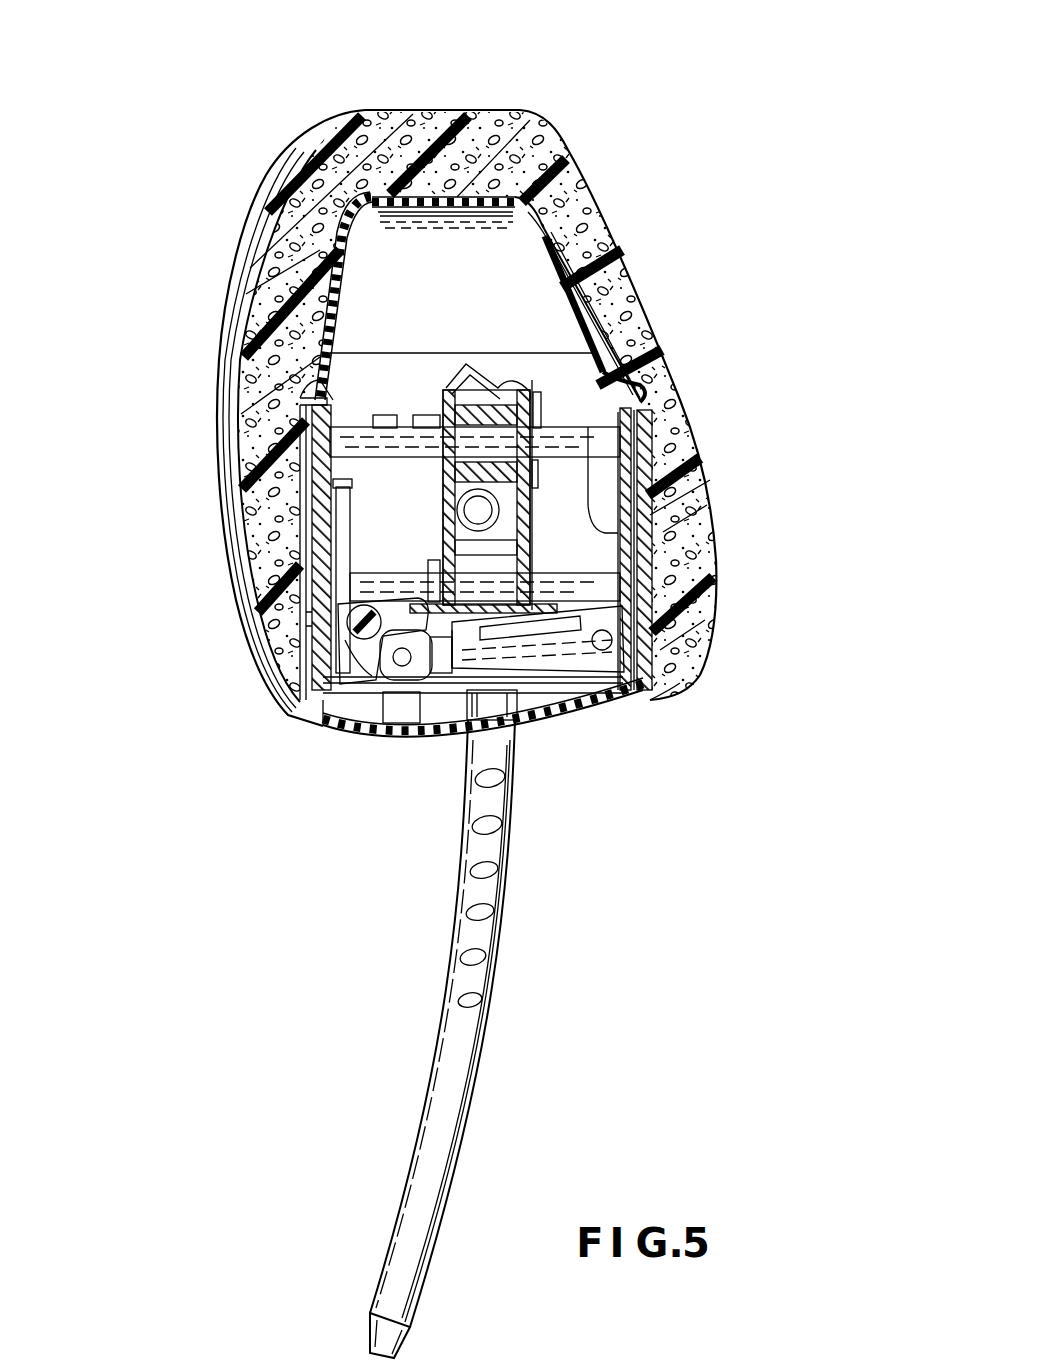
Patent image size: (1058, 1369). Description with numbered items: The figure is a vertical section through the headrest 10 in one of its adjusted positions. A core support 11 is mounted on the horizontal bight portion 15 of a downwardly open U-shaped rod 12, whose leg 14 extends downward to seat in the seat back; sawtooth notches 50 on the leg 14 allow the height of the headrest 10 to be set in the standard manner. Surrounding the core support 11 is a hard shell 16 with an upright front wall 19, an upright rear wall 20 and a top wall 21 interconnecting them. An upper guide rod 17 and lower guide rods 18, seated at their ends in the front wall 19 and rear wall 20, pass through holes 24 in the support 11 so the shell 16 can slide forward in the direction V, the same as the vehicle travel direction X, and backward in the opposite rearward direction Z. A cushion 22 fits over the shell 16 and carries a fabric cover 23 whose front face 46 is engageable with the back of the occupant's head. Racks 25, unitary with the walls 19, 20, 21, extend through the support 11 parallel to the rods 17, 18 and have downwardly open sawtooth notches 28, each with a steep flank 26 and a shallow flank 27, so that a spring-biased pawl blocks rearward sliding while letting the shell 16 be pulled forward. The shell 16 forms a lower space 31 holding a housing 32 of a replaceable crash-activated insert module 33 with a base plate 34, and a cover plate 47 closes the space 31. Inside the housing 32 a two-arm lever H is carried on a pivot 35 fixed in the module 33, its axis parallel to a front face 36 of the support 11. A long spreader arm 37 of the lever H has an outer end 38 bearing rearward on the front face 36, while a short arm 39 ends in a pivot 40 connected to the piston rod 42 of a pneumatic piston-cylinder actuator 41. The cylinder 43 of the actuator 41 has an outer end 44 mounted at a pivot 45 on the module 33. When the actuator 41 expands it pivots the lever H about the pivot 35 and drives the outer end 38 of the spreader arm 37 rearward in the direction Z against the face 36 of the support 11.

The headrest 10 is at (320, 107).
The core support 11 is at (500, 372).
The U-shaped rod 12 is at (508, 1053).
The leg 14 is at (425, 1132).
The horizontal bight portion 15 is at (527, 490).
The hard shell 16 is at (558, 243).
The upper guide rod 17 is at (535, 413).
The lower guide rod 18 is at (542, 596).
The upright front wall 19 is at (318, 511).
The upright rear wall 20 is at (640, 560).
The top wall 21 is at (510, 196).
The cushion 22 is at (470, 112).
The fabric cover 23 is at (258, 205).
The hole 24 is at (552, 300).
The rack 25 is at (447, 398).
The steep flank 26 is at (292, 300).
The shallow flank 27 is at (393, 416).
The sawtooth notch 28 is at (433, 416).
The lower cavity 31 is at (305, 712).
The housing 32 is at (318, 618).
The crash-activated insert module 33 is at (592, 700).
The base plate 34 is at (522, 722).
The pivot 35 is at (327, 658).
The front face 36 is at (440, 503).
The long spreader arm 37 is at (352, 526).
The outer end 38 is at (318, 410).
The short arm 39 is at (340, 732).
The pivot 40 is at (400, 668).
The pneumatic piston-cylinder actuator 41 is at (470, 668).
The piston rod 42 is at (448, 668).
The cylinder 43 is at (570, 672).
The outer end 44 is at (608, 648).
The pivot 45 is at (652, 682).
The front face 46 is at (224, 388).
The cover plate 47 is at (348, 742).
The sawtooth notch 50 is at (486, 960).
The two-arm lever H is at (357, 645).
The forward direction V is at (220, 900).
The vehicle travel direction X is at (182, 978).
The rearward direction Z is at (718, 873).